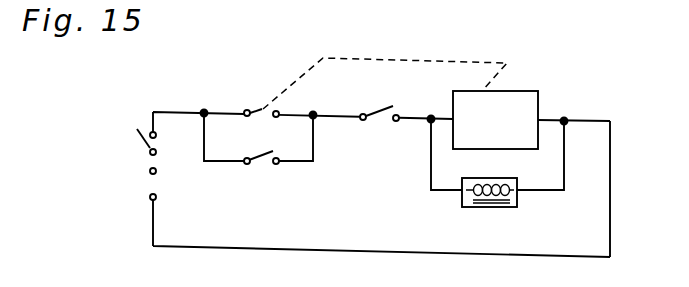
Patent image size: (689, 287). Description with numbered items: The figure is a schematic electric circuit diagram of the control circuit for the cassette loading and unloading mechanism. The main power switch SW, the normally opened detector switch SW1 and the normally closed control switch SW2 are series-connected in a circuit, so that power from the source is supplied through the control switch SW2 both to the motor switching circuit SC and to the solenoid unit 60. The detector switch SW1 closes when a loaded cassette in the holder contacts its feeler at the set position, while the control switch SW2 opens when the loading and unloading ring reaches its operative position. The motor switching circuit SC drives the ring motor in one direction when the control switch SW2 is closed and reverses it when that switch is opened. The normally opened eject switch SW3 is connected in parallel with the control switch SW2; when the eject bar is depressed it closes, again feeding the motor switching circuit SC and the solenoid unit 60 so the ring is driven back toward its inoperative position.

The main power switch SW is at (138, 143).
The detector switch SW1 is at (390, 105).
The control switch SW2 is at (258, 110).
The eject switch SW3 is at (262, 164).
The motor switching circuit SC is at (538, 92).
The solenoid unit 60 is at (490, 208).